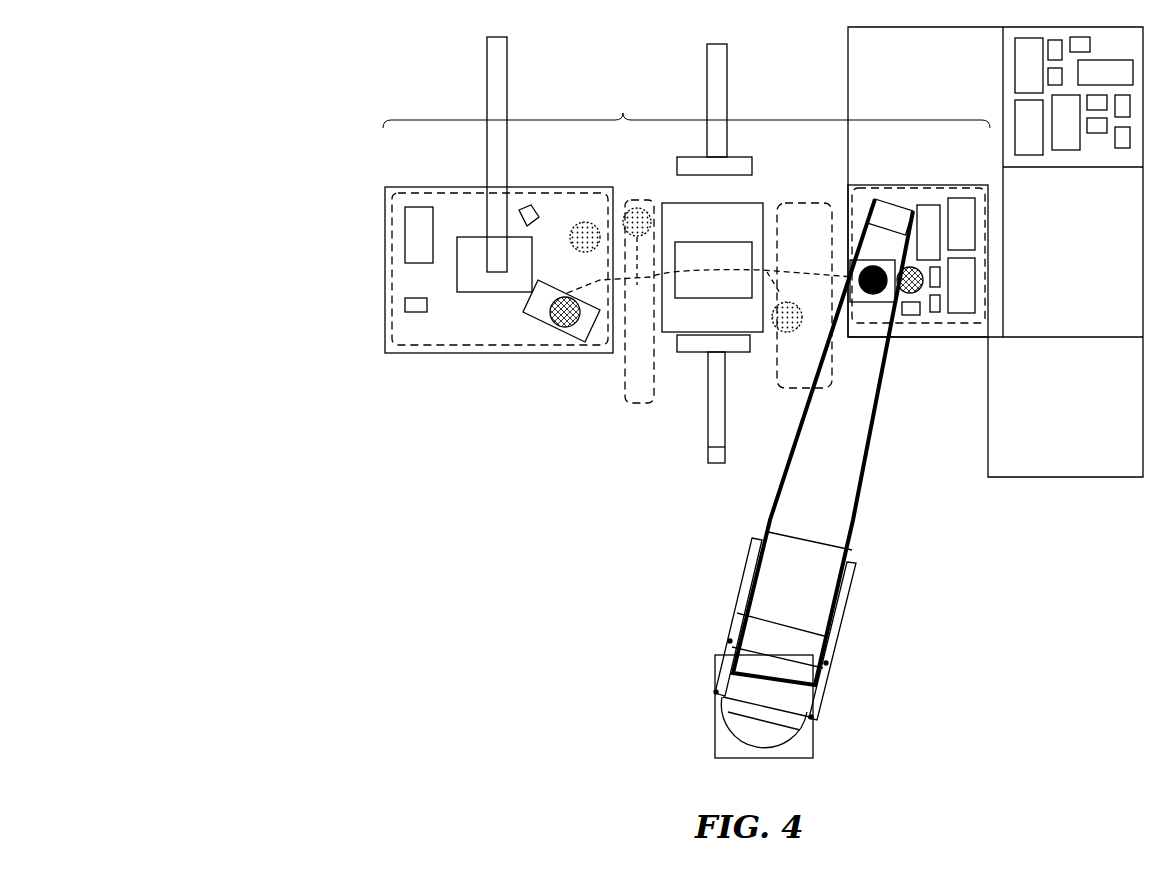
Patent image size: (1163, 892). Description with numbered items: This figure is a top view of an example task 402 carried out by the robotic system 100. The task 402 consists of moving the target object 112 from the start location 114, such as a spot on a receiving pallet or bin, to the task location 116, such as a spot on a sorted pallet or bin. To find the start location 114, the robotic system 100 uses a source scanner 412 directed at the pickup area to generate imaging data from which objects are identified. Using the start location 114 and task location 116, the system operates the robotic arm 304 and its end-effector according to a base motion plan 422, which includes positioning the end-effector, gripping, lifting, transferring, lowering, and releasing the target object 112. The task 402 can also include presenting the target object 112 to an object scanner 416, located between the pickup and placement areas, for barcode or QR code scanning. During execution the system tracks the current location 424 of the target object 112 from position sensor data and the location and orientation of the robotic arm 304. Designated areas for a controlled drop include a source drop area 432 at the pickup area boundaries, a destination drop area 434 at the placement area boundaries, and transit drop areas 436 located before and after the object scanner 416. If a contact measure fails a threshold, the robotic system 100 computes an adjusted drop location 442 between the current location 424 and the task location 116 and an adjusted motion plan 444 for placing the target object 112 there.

The robotic system 100 is at (290, 578).
The target object 112 is at (522, 313).
The start location 114 is at (572, 330).
The task location 116 is at (910, 297).
The robotic arm 304 is at (800, 517).
The task 402 is at (686, 106).
The source scanner 412 is at (457, 291).
The object scanner 416 is at (730, 298).
The base motion plan 422 is at (670, 270).
The current location 424 is at (883, 260).
The source drop area 432 is at (385, 353).
The destination drop area 434 is at (985, 317).
The transit drop area 436 is at (628, 400).
The adjusted drop location 442 is at (624, 222).
The adjusted motion plan 444 is at (600, 268).